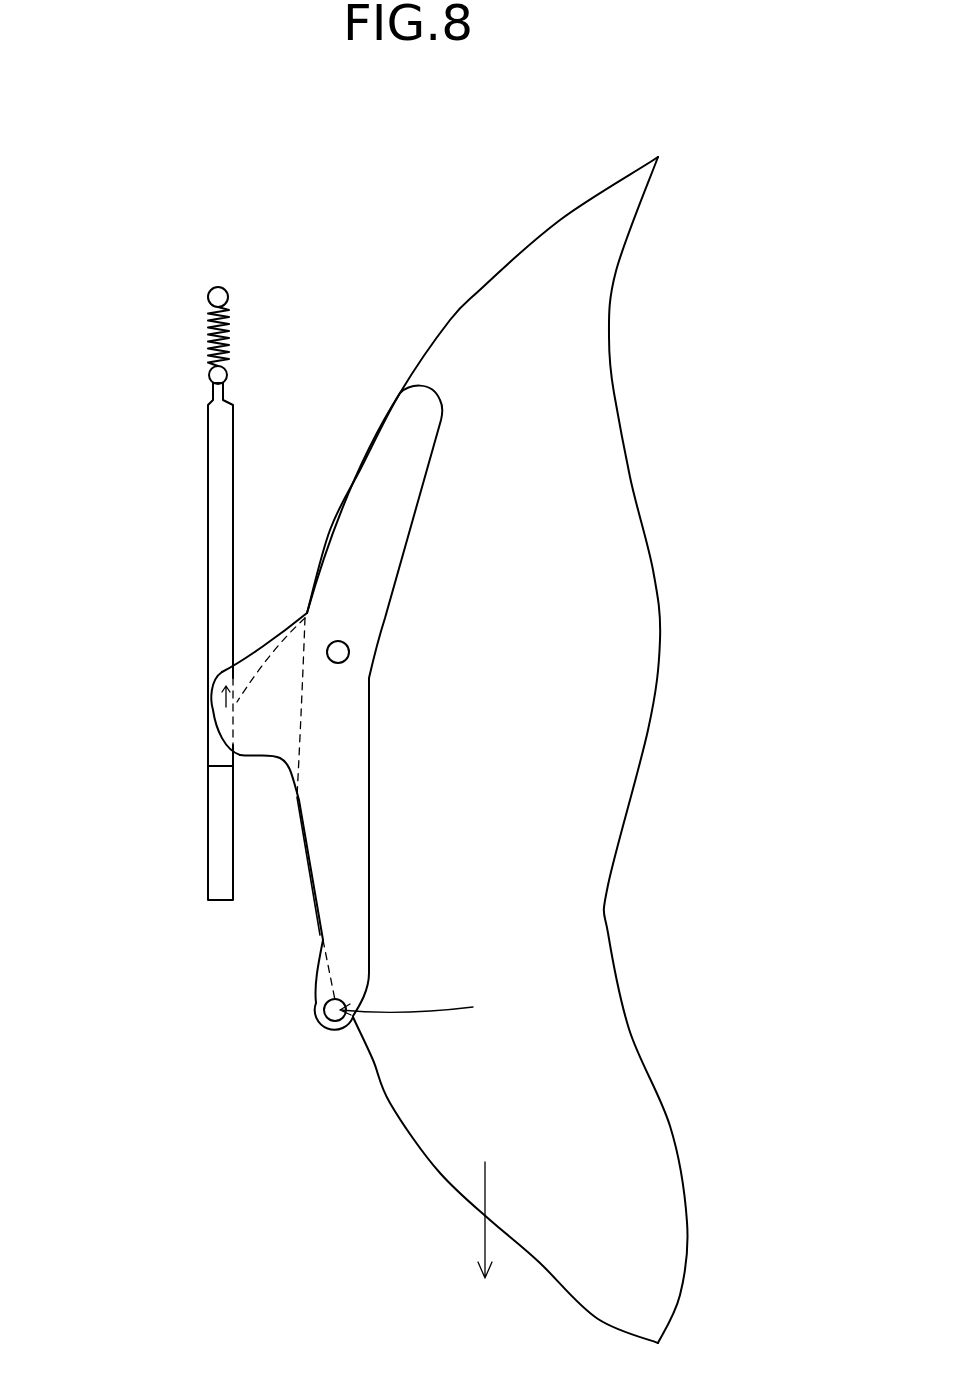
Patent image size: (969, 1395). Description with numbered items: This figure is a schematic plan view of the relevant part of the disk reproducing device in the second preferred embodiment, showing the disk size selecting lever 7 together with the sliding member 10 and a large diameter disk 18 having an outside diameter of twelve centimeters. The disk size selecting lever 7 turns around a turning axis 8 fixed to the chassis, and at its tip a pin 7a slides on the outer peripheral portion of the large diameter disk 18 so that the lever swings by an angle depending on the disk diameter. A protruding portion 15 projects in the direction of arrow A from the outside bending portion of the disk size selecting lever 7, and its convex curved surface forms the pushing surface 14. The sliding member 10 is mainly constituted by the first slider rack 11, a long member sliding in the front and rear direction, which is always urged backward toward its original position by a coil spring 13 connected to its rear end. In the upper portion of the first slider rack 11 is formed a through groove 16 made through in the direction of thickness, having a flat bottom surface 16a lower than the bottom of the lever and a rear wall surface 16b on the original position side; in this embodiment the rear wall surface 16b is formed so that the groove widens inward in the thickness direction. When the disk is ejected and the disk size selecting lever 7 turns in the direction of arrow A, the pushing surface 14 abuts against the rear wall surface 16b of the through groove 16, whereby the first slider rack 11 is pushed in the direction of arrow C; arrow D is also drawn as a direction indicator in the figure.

The disk size selecting lever 7 is at (271, 1012).
The pin 7a is at (324, 1008).
The turning axis 8 is at (350, 652).
The sliding member 10 is at (156, 633).
The first slider rack 11 is at (215, 582).
The coil spring 13 is at (207, 338).
The pushing surface 14 is at (256, 650).
The protruding portion 15 is at (263, 745).
The through groove 16 is at (147, 725).
The flat bottom surface 16a is at (222, 752).
The rear wall surface 16b is at (212, 683).
The large diameter disk 18 is at (505, 297).
The arrow A is at (422, 1015).
The arrow C is at (222, 701).
The direction D is at (485, 1243).